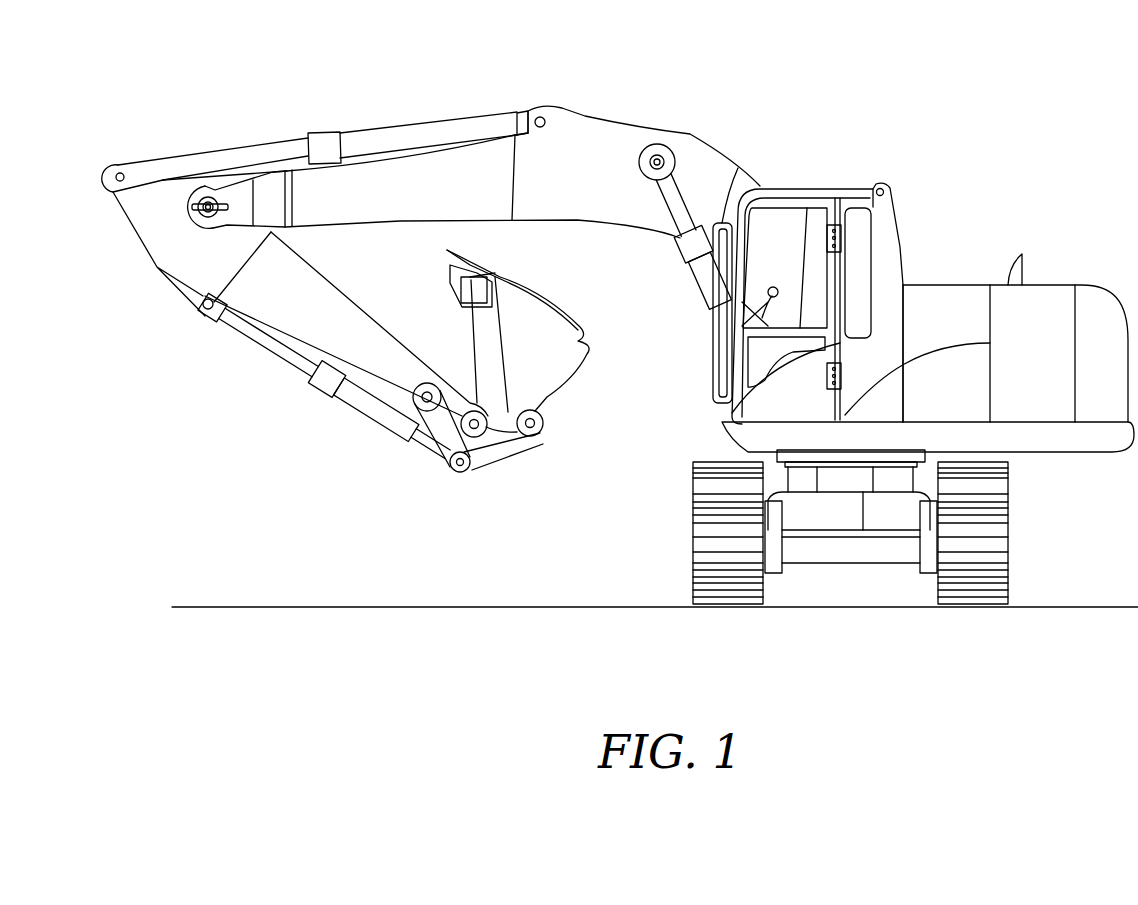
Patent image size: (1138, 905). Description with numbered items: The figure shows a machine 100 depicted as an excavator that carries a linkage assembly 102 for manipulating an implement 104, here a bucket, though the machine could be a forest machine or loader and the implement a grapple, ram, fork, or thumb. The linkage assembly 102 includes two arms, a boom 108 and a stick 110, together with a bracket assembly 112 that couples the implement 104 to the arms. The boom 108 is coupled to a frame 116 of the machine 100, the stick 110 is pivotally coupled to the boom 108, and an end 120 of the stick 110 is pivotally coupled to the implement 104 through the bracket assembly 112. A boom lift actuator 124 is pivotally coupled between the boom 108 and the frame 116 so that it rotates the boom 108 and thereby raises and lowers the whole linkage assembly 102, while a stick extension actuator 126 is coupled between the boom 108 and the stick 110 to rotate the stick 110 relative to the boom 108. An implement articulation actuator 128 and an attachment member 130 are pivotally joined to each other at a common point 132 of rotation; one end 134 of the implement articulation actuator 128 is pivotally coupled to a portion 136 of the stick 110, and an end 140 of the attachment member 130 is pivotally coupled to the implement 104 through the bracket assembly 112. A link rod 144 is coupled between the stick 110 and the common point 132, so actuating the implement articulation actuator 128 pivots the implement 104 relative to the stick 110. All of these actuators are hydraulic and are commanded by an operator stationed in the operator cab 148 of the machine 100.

The machine 100 is at (1017, 115).
The linkage assembly 102 is at (700, 125).
The implement 104 is at (588, 347).
The boom 108 is at (657, 128).
The stick 110 is at (328, 274).
The bracket assembly 112 is at (548, 429).
The frame 116 is at (752, 455).
The end of the stick 120 is at (460, 393).
The boom lift actuator 124 is at (732, 175).
The stick extension actuator 126 is at (422, 127).
The implement articulation actuator 128 is at (284, 366).
The attachment member 130 is at (484, 437).
The common point of rotation 132 is at (456, 470).
The end of the implement articulation actuator 134 is at (216, 320).
The portion of the stick 136 is at (178, 295).
The end of the attachment member 140 is at (514, 430).
The link rod 144 is at (412, 455).
The operator cab 148 is at (856, 186).